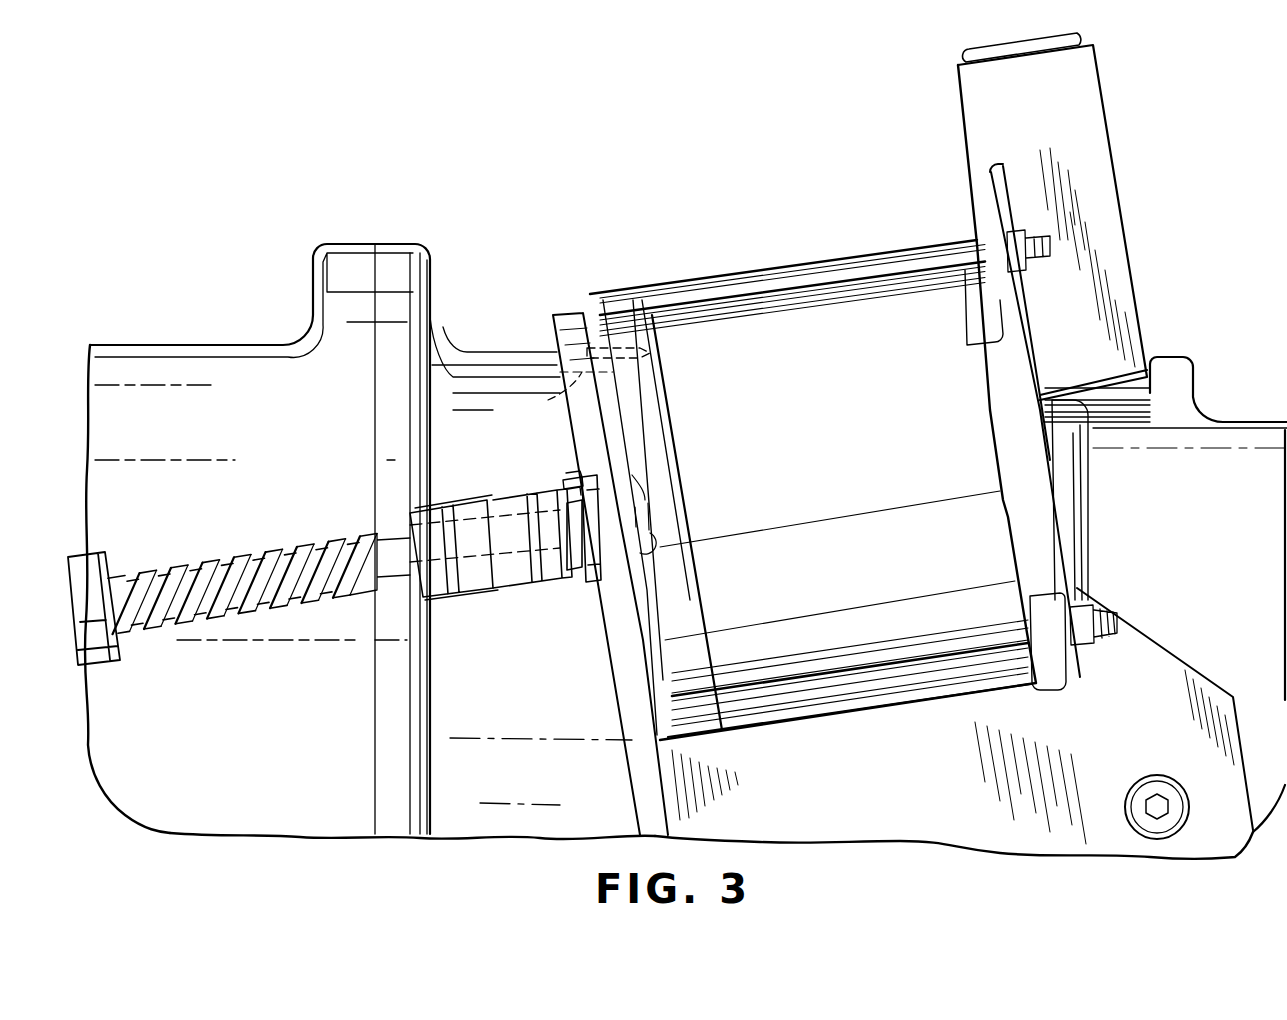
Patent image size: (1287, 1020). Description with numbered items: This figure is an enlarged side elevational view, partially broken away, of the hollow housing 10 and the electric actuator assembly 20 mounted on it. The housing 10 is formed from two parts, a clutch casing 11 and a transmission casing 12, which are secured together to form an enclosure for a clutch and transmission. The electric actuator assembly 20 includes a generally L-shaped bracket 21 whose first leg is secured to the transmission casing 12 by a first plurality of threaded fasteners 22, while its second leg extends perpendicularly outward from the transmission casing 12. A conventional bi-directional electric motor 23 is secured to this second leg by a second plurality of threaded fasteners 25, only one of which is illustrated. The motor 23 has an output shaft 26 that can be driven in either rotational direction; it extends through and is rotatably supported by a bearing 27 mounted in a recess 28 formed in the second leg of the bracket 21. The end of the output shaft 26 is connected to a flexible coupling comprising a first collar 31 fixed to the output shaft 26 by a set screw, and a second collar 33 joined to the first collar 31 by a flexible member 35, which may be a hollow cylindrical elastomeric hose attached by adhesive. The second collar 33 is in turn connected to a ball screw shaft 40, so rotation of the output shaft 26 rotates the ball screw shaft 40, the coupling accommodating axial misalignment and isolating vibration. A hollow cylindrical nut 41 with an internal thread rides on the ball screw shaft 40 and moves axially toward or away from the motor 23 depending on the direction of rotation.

The housing 10 is at (338, 196).
The clutch casing 11 is at (250, 366).
The transmission casing 12 is at (1240, 438).
The electric actuator assembly 20 is at (697, 236).
The bracket 21 is at (569, 318).
The threaded fasteners 22 is at (1162, 835).
The electric motor 23 is at (835, 318).
The threaded fasteners 25 is at (550, 402).
The output shaft 26 is at (578, 572).
The bearing 27 is at (594, 586).
The recess 28 is at (566, 481).
The first collar 31 is at (518, 588).
The second collar 33 is at (472, 600).
The flexible member 35 is at (486, 500).
The ball screw shaft 40 is at (250, 608).
The nut 41 is at (102, 555).